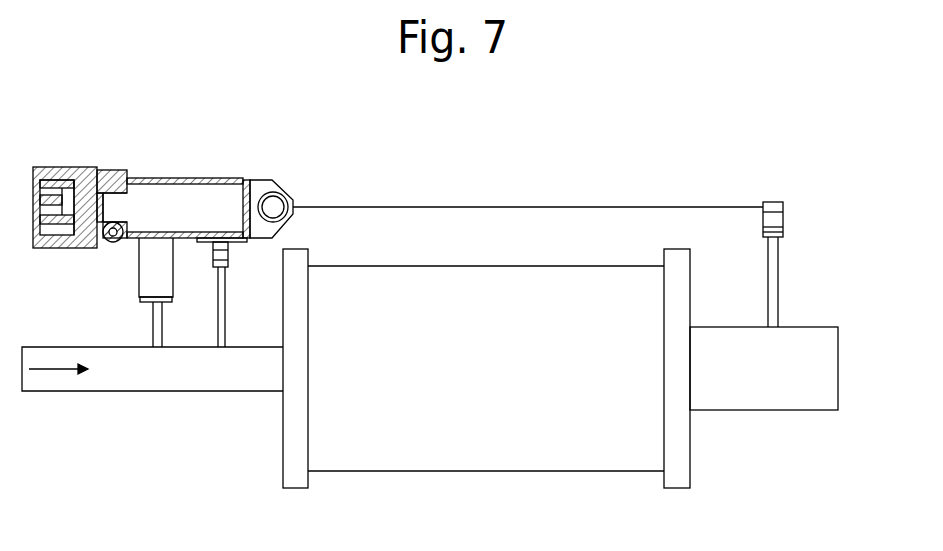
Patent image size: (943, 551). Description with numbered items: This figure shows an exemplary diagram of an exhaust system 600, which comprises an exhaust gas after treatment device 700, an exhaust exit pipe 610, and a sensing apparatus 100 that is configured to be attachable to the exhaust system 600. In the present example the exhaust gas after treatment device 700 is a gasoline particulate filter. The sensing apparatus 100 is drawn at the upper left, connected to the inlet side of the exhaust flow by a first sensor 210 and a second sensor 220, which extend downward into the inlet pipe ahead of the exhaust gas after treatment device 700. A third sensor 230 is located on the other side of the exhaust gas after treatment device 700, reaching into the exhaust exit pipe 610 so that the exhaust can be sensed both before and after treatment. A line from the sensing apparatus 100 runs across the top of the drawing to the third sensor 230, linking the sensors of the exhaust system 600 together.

The sensing apparatus 100 is at (108, 118).
The first sensor 210 is at (153, 320).
The second sensor 220 is at (220, 323).
The third sensor 230 is at (773, 250).
The exhaust system 600 is at (419, 207).
The exhaust exit pipe 610 is at (807, 372).
The exhaust gas after treatment device 700 is at (447, 430).